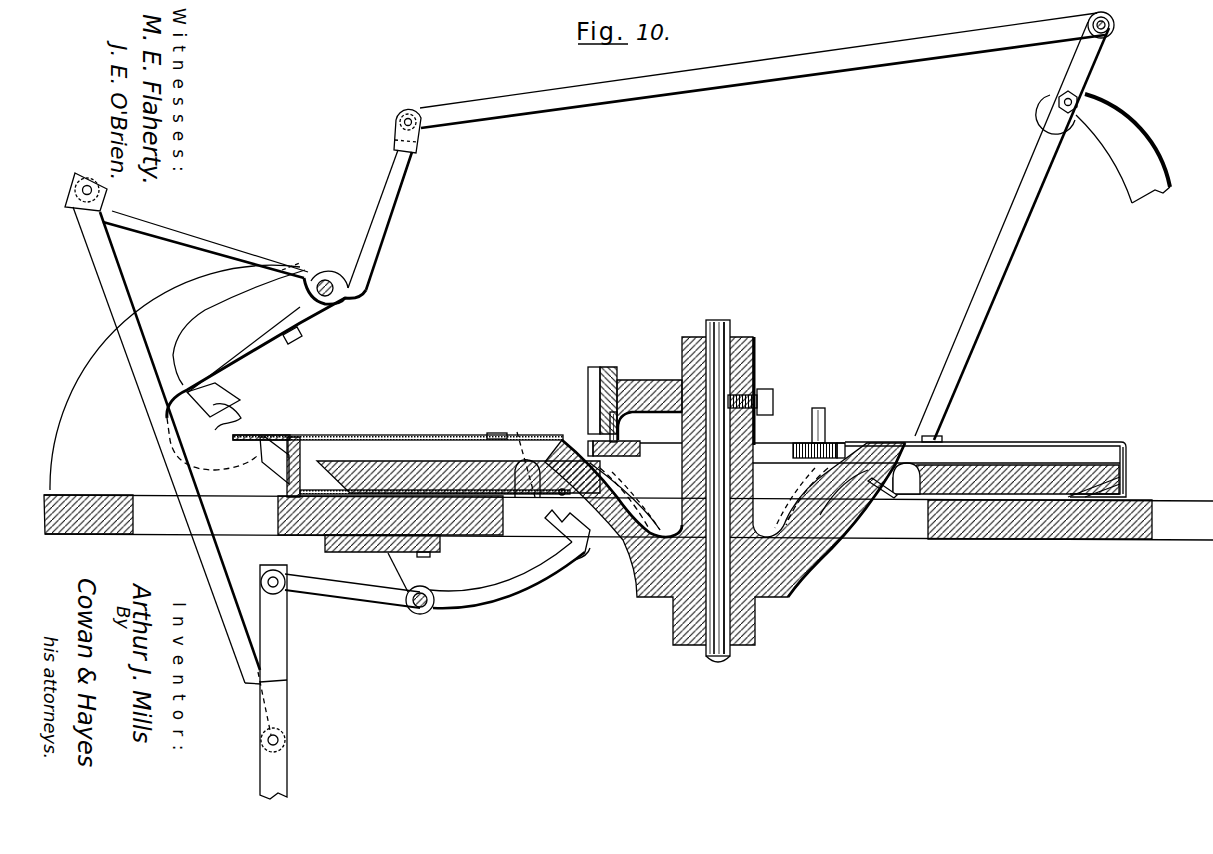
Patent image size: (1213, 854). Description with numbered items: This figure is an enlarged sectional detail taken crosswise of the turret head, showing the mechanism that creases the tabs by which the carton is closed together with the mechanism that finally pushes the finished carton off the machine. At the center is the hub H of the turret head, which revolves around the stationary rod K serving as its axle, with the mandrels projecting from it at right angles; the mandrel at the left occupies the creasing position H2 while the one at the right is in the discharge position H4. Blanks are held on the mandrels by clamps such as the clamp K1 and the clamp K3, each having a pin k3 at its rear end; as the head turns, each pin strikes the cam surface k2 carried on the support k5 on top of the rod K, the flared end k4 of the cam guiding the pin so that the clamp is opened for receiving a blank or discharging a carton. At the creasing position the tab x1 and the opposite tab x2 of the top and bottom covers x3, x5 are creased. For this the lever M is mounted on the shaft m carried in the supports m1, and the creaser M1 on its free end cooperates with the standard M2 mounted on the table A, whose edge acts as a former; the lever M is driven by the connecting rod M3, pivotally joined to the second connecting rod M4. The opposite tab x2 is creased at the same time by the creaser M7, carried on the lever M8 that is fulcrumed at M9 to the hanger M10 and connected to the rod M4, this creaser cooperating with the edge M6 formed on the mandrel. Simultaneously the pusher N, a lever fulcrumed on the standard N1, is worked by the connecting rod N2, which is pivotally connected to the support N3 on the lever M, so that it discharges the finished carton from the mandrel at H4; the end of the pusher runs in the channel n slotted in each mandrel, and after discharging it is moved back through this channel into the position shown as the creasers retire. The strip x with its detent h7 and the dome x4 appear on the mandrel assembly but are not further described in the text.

The table A is at (1032, 540).
The hub H is at (800, 567).
The mandrel H2 is at (380, 455).
The mandrel H4 is at (1062, 467).
The rod K is at (722, 660).
The clamp K1 is at (835, 440).
The clamp K3 is at (626, 485).
The cam surface k2 is at (608, 365).
The pin k3 is at (619, 440).
The flared end of cam k4 is at (590, 374).
The support k5 is at (757, 342).
The lever M is at (250, 256).
The creaser M1 is at (227, 398).
The standard M2 is at (299, 437).
The connecting rod M3 is at (118, 296).
The second connecting rod M4 is at (283, 656).
The edge M6 is at (504, 510).
The creaser M7 is at (571, 565).
The lever M8 is at (510, 594).
The fulcrum M9 is at (420, 614).
The hanger M10 is at (442, 566).
The shaft m is at (327, 274).
The support m1 is at (208, 377).
The pusher N is at (978, 321).
The standard N1 is at (1148, 148).
The connecting rod N2 is at (765, 72).
The support N3 is at (388, 207).
The slot n is at (519, 458).
The detent block h7 is at (495, 432).
The strip x is at (424, 439).
The tab x1 is at (245, 436).
The tab x2 is at (558, 495).
The top cover x3 is at (284, 436).
The tooth x4 is at (286, 480).
The bottom cover x5 is at (903, 498).